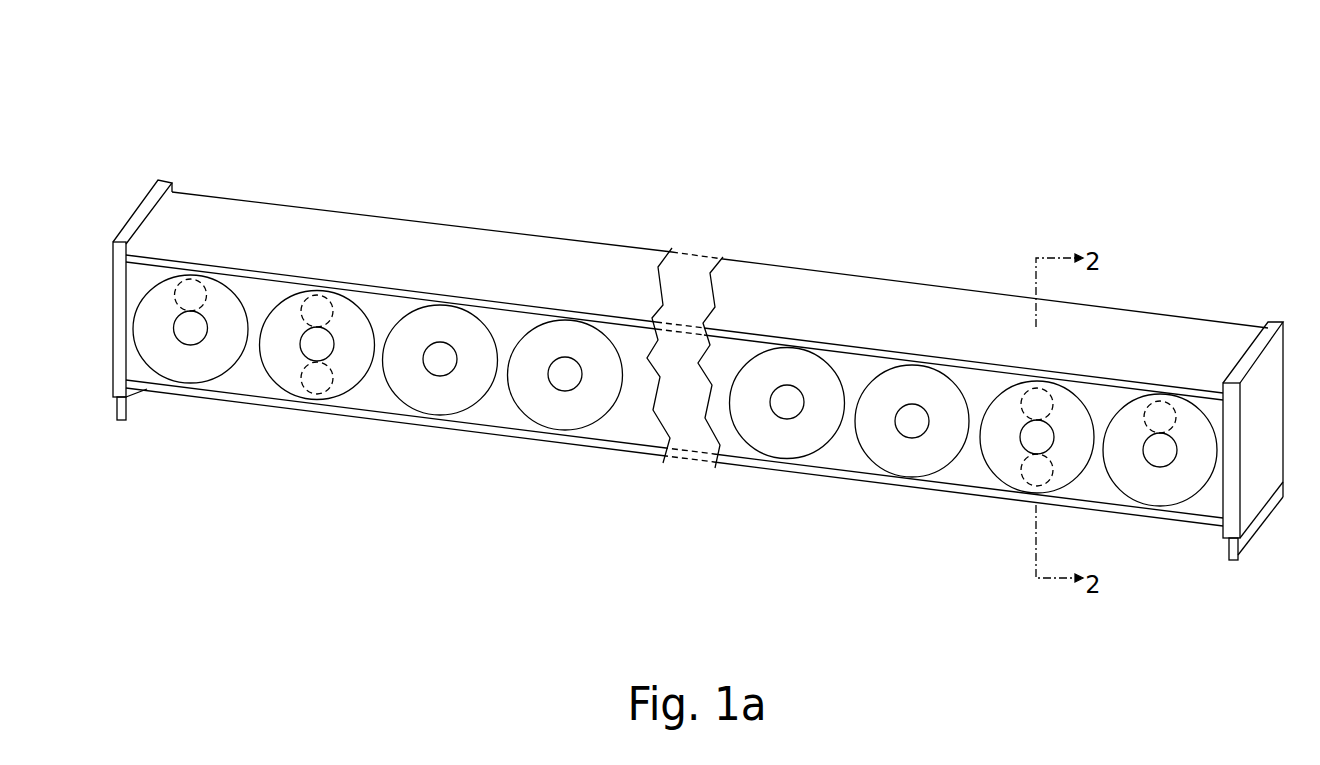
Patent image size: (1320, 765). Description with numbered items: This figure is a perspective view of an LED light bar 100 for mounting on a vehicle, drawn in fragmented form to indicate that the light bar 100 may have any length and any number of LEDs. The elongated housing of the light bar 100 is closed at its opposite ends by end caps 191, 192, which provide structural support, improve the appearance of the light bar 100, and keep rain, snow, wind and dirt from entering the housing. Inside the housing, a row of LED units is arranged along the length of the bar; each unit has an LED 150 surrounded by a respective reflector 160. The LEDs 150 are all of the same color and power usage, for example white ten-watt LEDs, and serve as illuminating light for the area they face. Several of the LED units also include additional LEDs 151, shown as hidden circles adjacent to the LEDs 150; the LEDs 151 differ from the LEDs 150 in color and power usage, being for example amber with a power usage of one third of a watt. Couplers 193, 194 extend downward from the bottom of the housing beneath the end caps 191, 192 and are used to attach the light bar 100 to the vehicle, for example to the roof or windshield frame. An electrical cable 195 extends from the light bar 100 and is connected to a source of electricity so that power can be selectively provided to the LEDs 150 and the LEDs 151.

The light bar 100 is at (782, 192).
The LEDs 150 is at (192, 335).
The LEDs 151 is at (188, 293).
The reflectors 160 is at (180, 287).
The end cap 191 is at (127, 215).
The end cap 192 is at (1283, 488).
The coupler 193 is at (124, 420).
The coupler 194 is at (1250, 543).
The electrical cable 195 is at (1258, 433).